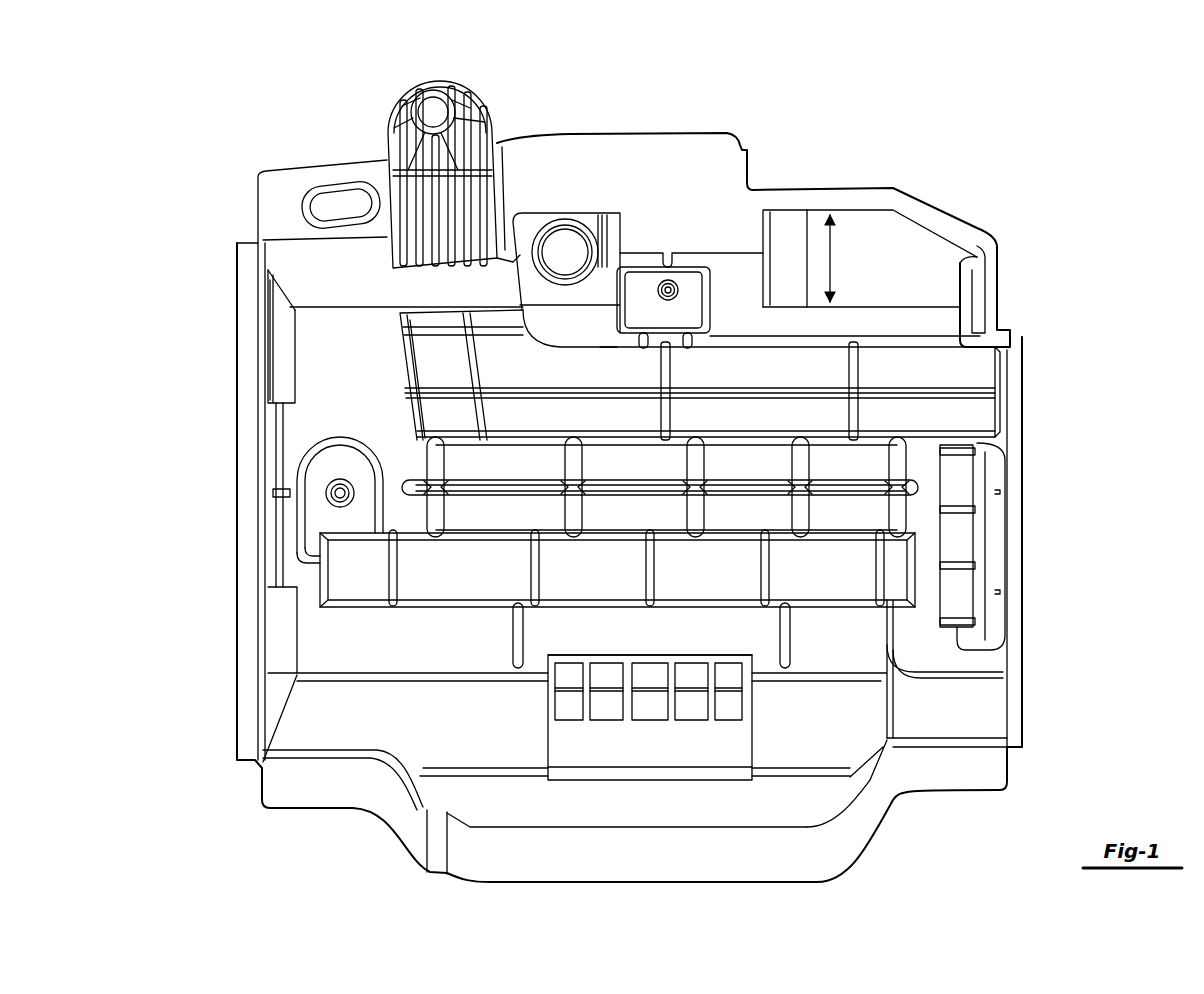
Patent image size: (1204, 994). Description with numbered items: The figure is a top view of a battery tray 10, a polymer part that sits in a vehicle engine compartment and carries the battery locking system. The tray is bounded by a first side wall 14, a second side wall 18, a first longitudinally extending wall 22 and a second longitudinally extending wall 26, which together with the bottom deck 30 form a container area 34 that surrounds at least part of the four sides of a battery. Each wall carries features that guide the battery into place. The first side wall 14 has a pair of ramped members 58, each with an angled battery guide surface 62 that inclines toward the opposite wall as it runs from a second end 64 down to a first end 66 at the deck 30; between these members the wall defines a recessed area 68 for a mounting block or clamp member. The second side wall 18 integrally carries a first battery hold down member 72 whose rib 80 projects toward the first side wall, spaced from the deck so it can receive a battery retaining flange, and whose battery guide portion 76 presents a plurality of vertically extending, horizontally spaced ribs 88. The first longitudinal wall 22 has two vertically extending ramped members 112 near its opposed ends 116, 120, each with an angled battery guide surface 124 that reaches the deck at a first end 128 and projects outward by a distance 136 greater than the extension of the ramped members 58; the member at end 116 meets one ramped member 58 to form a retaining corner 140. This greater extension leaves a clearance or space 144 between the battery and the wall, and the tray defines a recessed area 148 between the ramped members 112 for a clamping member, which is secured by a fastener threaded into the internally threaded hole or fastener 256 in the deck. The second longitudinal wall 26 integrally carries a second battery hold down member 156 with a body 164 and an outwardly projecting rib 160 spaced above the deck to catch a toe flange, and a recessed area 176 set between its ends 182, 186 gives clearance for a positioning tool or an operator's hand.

The battery tray 10 is at (1000, 137).
The first side wall 14 is at (258, 452).
The second side wall 18 is at (1007, 407).
The first longitudinally extending wall 22 is at (785, 210).
The second longitudinally extending wall 26 is at (965, 740).
The deck 30 is at (323, 353).
The container area 34 is at (340, 656).
The ramped members 58 is at (283, 332).
The angled battery guide surface 62 is at (277, 373).
The second end 64 is at (262, 312).
The first end 66 is at (297, 388).
The recessed area 68 is at (283, 443).
The first battery hold down member 72 is at (940, 553).
The battery guide portion 76 is at (960, 503).
The rib 80 is at (957, 590).
The ribs 88 is at (975, 452).
The ramped members 112 is at (497, 285).
The end 116 is at (258, 215).
The end 120 is at (985, 262).
The angled battery guide surface 124 is at (330, 281).
The first end 128 is at (357, 310).
The distance 136 is at (833, 258).
The retaining corner 140 is at (293, 312).
The clearance or space 144 is at (727, 285).
The recessed area 148 is at (642, 247).
The second battery hold down member 156 is at (548, 687).
The rib 160 is at (598, 657).
The body 164 is at (630, 754).
The recessed area 176 is at (800, 805).
The end 182 is at (280, 722).
The end 186 is at (1003, 730).
The internally threaded hole or fastener 256 is at (672, 282).